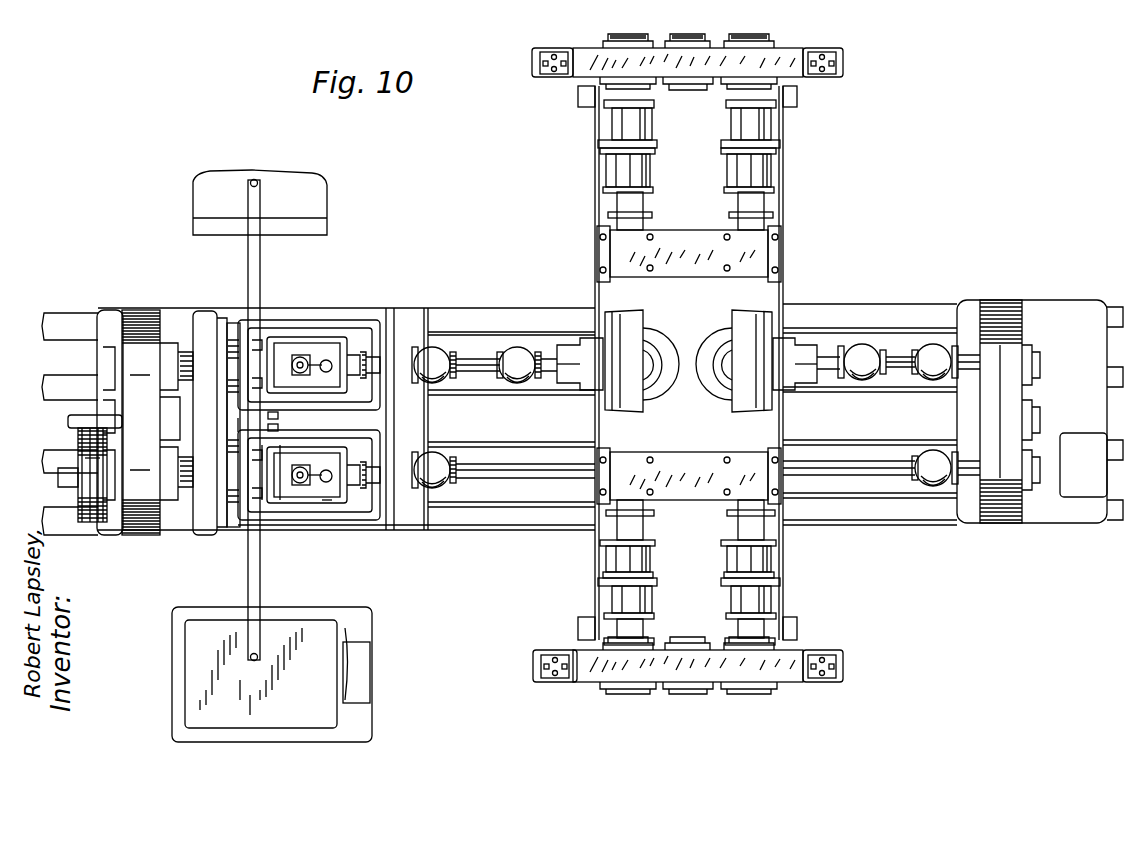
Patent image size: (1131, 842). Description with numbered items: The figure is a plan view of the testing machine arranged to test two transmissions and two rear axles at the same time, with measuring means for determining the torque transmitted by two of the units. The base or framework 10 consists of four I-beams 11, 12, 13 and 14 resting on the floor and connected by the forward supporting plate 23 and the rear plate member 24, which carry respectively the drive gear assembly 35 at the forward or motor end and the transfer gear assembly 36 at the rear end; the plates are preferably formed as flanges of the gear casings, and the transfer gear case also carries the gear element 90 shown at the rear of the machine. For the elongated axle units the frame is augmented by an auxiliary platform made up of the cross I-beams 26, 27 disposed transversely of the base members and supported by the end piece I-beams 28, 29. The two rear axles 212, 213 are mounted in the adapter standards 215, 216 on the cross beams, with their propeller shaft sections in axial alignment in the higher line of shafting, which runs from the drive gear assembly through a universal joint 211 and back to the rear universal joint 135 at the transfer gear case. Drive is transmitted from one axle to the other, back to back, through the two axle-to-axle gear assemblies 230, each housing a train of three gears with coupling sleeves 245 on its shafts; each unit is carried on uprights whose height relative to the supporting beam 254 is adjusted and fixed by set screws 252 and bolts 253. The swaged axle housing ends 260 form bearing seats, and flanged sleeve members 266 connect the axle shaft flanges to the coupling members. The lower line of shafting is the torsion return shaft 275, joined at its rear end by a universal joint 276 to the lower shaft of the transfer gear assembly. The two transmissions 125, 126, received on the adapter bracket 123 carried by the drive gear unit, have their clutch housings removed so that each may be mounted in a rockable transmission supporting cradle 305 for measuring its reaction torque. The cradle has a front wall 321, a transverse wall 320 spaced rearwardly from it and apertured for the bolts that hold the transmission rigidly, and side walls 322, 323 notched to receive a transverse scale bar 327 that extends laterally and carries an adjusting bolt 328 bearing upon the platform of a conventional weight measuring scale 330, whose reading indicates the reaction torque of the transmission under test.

The base or framework 10 is at (445, 305).
The I-beam 11 is at (205, 470).
The I-beam 12 is at (533, 445).
The I-beam 13 is at (478, 395).
The I-beam 14 is at (543, 313).
The forward supporting plate 23 is at (110, 312).
The rear plate member 24 is at (1055, 310).
The cross I-beam 26 is at (605, 205).
The cross I-beam 27 is at (772, 205).
The end piece I-beam 28 is at (795, 630).
The end piece I-beam 29 is at (800, 100).
The drive gear assembly 35 is at (145, 310).
The transfer gear assembly 36 is at (1000, 525).
The right gear wheel 90 is at (1000, 305).
The adapter bracket 123 is at (205, 315).
The transmission 125 is at (335, 500).
The transmission 126 is at (310, 345).
The rear universal joint 135 is at (930, 350).
The universal joint 211 is at (515, 350).
The rear axle 212 is at (628, 312).
The rear axle 213 is at (735, 312).
The adapter bracket or standard 215 is at (677, 240).
The adapter bracket or standard 216 is at (683, 460).
The axle-to-axle gear assembly 230 is at (780, 67).
The coupling sleeve 245 is at (610, 618).
The set screw 252 is at (540, 63).
The bolt 253 is at (835, 56).
The supporting beam 254 is at (845, 66).
The swaged axle housing end 260 is at (618, 165).
The sleeve member 266 is at (618, 130).
The torsion return shaft 275 is at (845, 466).
The universal joint 276 is at (935, 488).
The transmission supporting cradle 305 is at (325, 522).
The transverse wall 320 is at (270, 503).
The front wall 321 is at (238, 500).
The side wall 322 is at (300, 520).
The side wall 323 is at (328, 433).
The scale bar 327 is at (260, 258).
The adjusting bolt 328 is at (254, 182).
The weight measuring scale 330 is at (327, 190).